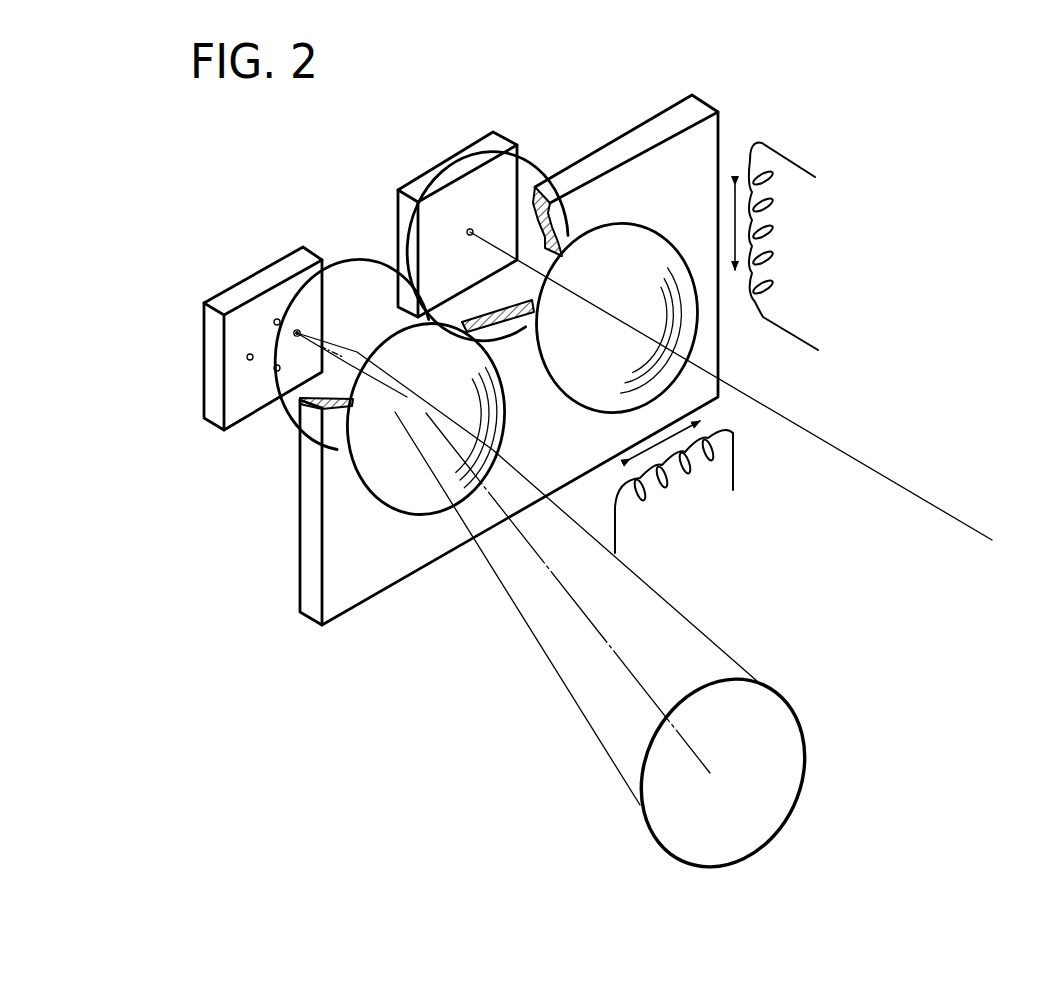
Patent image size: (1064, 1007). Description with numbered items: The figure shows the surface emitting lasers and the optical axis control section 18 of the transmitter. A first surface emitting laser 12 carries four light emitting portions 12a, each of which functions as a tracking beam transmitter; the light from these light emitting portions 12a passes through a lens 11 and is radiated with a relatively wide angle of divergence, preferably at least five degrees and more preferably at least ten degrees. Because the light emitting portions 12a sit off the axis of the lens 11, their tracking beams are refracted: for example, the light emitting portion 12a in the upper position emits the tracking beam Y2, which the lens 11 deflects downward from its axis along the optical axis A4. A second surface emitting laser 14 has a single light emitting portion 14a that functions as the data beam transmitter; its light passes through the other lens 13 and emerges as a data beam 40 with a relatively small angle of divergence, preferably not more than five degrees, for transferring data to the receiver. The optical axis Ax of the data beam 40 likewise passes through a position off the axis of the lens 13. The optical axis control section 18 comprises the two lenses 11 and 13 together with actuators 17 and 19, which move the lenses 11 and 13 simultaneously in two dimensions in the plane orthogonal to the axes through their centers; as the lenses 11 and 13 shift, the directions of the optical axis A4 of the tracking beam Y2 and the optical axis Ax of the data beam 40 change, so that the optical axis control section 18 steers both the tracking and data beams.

The lens 11 is at (407, 501).
The surface emitting laser 12 is at (243, 281).
The light emitting portion 12a is at (278, 319).
The lens 13 is at (680, 325).
The surface emitting laser 14 is at (452, 156).
The light emitting portion 14a is at (473, 229).
The actuator 17 is at (677, 491).
The optical axis control section 18 is at (262, 513).
The actuator 19 is at (792, 247).
The data beam 40 is at (887, 478).
The optical axis Ax is at (967, 523).
The tracking beam Y2 is at (710, 633).
The optical axis A4 is at (690, 744).